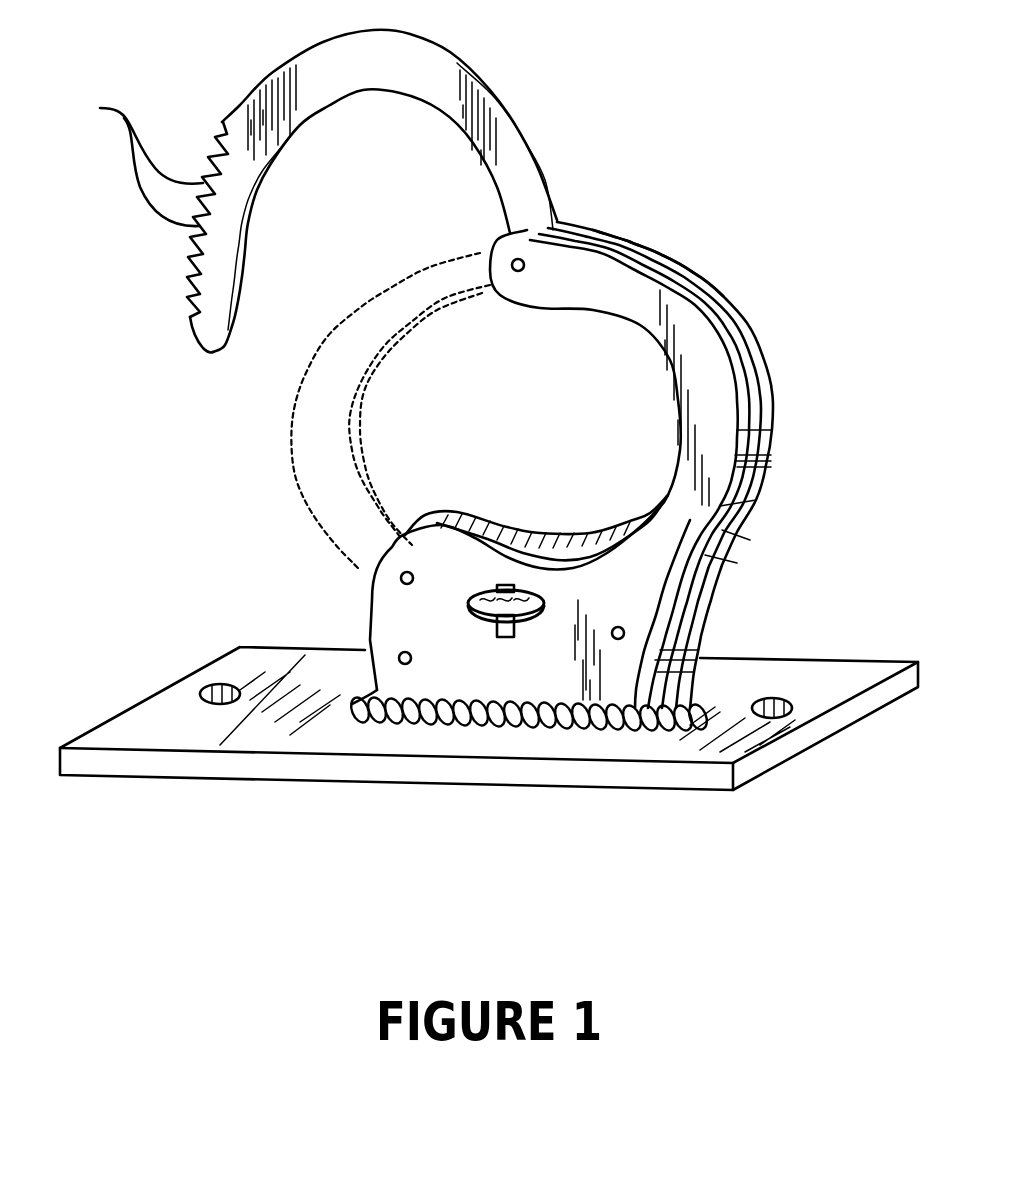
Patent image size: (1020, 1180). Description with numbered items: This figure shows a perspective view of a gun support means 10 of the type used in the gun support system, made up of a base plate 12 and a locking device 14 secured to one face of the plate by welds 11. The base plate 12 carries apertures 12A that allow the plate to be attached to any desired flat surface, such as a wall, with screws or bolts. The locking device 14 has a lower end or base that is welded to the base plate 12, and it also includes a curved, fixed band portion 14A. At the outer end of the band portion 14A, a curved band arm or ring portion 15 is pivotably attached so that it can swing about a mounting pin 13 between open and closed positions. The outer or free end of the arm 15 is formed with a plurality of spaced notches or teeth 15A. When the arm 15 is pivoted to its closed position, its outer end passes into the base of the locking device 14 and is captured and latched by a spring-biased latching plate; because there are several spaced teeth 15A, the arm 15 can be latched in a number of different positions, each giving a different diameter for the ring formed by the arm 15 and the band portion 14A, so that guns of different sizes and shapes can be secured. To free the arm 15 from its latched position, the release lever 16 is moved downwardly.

The gun support means 10 is at (697, 206).
The welds 11 is at (467, 722).
The base plate 12 is at (779, 650).
The apertures 12A is at (222, 687).
The mounting pin 13 is at (512, 264).
The locking device 14 is at (764, 507).
The curved, fixed band portion 14A is at (727, 313).
The curved band arm 15 is at (487, 73).
The spaced notches or teeth 15A is at (138, 225).
The release lever 16 is at (492, 592).